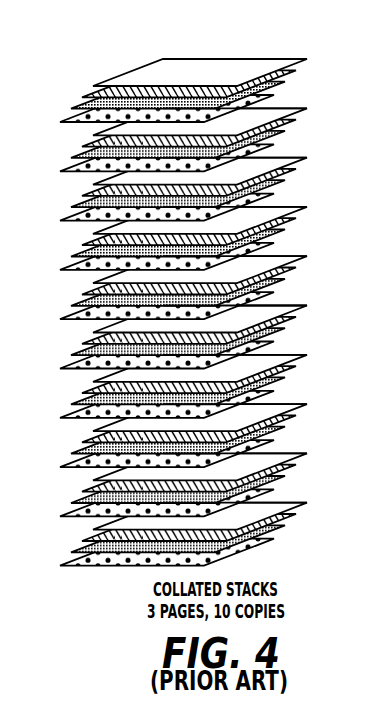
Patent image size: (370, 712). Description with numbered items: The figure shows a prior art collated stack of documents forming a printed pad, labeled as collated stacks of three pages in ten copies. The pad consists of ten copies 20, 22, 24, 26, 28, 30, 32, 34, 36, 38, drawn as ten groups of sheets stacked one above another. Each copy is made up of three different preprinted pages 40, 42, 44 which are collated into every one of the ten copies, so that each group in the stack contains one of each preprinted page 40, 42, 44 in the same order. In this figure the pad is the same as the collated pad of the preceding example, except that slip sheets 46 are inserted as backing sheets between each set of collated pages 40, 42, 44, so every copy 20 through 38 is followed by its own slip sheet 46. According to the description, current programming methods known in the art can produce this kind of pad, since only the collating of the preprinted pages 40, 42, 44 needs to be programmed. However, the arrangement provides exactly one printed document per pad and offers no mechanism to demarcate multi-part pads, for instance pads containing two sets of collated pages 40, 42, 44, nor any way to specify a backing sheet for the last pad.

The copy 20 is at (184, 73).
The copy 22 is at (302, 108).
The copy 24 is at (302, 158).
The copy 26 is at (302, 207).
The copy 28 is at (302, 256).
The copy 30 is at (302, 306).
The copy 32 is at (302, 355).
The copy 34 is at (302, 404).
The copy 36 is at (302, 453).
The copy 38 is at (302, 503).
The preprinted page 40 is at (130, 72).
The preprinted page 42 is at (96, 92).
The preprinted page 44 is at (78, 107).
The slip sheet 46 is at (65, 121).